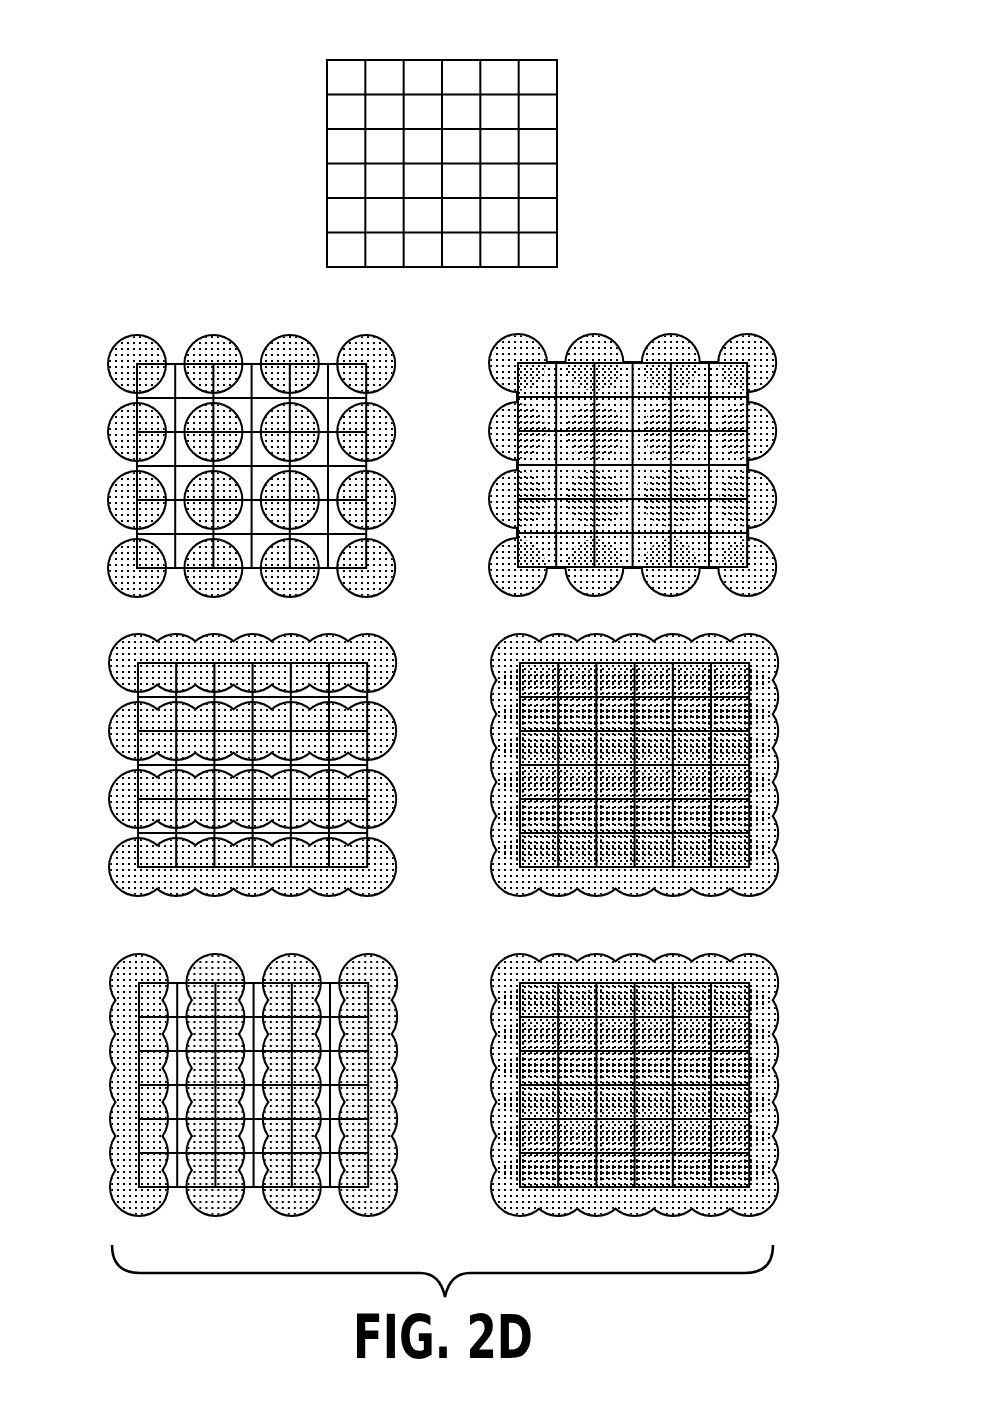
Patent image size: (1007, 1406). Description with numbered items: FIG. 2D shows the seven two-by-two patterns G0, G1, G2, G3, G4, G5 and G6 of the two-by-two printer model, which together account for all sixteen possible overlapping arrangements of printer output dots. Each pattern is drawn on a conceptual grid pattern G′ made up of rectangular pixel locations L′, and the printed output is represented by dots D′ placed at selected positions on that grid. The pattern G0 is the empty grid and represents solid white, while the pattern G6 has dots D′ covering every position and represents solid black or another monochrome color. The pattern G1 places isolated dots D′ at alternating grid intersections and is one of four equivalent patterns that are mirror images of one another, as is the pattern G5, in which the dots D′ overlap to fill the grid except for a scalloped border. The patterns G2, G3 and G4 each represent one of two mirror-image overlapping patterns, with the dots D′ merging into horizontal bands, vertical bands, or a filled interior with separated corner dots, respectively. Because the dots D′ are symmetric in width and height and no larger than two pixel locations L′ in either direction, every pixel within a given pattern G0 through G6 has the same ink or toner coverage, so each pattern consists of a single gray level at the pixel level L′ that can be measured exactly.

The pixel location L′ is at (535, 78).
The conceptual grid pattern G′ is at (445, 630).
The dot D′ is at (823, 1213).
The pattern G0 is at (442, 184).
The pattern G1 is at (251, 497).
The pattern G2 is at (252, 802).
The pattern G3 is at (253, 1120).
The pattern G4 is at (632, 497).
The pattern G5 is at (634, 802).
The pattern G6 is at (634, 1122).